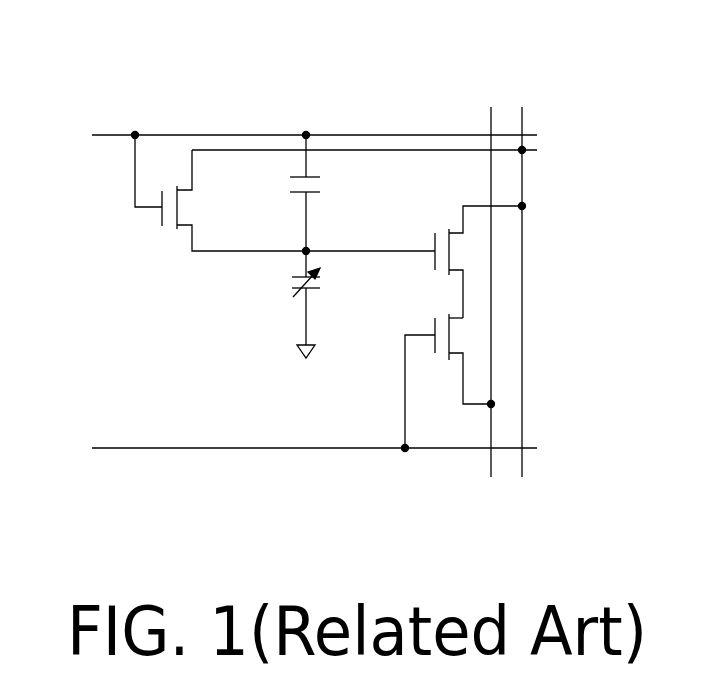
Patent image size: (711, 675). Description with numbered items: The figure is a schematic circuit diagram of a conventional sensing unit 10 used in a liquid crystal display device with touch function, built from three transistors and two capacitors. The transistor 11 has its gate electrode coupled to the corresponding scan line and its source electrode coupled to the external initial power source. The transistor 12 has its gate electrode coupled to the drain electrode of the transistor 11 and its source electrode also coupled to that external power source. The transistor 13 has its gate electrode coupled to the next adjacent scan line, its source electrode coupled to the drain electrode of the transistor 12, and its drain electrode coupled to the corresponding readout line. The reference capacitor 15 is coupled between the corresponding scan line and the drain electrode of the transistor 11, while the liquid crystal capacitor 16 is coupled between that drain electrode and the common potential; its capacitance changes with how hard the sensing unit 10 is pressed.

The sensing unit 10 is at (335, 48).
The transistor 11 is at (162, 218).
The transistor 12 is at (450, 247).
The transistor 13 is at (450, 330).
The reference capacitor 15 is at (313, 177).
The liquid crystal capacitor 16 is at (302, 292).